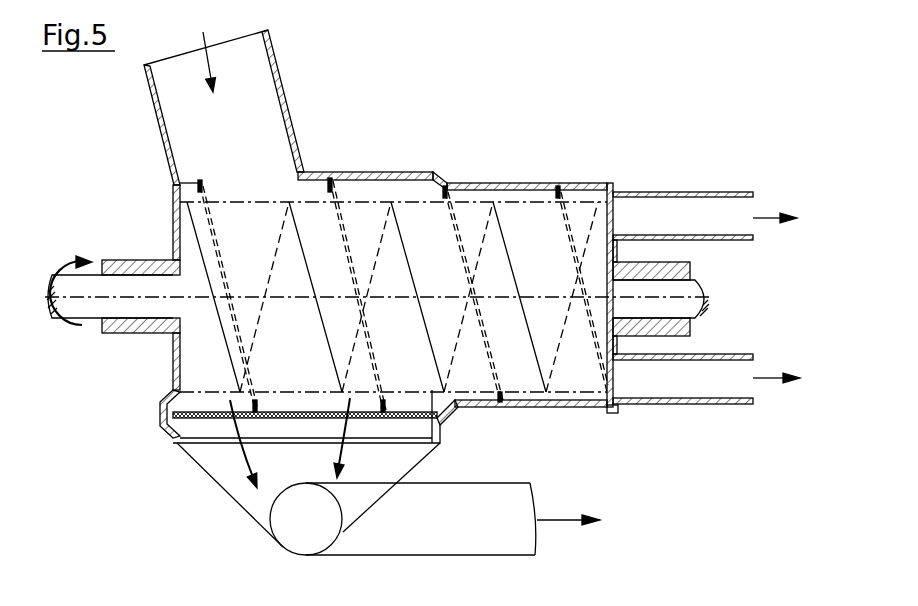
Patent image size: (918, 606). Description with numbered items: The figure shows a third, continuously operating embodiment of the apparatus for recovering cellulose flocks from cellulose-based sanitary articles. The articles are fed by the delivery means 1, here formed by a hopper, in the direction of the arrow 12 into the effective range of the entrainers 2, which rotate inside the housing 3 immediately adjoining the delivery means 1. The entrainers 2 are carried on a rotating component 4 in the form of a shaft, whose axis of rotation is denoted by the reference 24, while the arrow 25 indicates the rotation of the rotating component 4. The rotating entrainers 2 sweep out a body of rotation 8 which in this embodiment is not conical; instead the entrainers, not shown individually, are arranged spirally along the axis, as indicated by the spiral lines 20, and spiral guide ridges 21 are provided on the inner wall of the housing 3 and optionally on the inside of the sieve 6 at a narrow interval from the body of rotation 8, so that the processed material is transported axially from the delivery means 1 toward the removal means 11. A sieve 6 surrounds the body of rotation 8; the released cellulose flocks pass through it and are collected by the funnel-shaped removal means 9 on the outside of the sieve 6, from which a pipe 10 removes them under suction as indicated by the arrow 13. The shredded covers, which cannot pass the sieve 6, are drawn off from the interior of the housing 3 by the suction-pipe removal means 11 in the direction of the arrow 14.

The delivery means 1 is at (172, 113).
The entrainers 2 is at (212, 367).
The housing 3 is at (365, 173).
The rotating component 4 is at (692, 293).
The sieve 6 is at (203, 417).
The body of rotation 8 is at (243, 198).
The removal means 9 is at (257, 503).
The pipe 10 is at (417, 500).
The removal means 11 is at (697, 212).
The arrow 12 is at (203, 32).
The arrow 13 is at (553, 523).
The arrow 14 is at (762, 213).
The spiral lines 20 is at (303, 242).
The spiral guide ridges 21 is at (213, 238).
The axis of rotation 24 is at (95, 295).
The arrow 25 is at (65, 263).